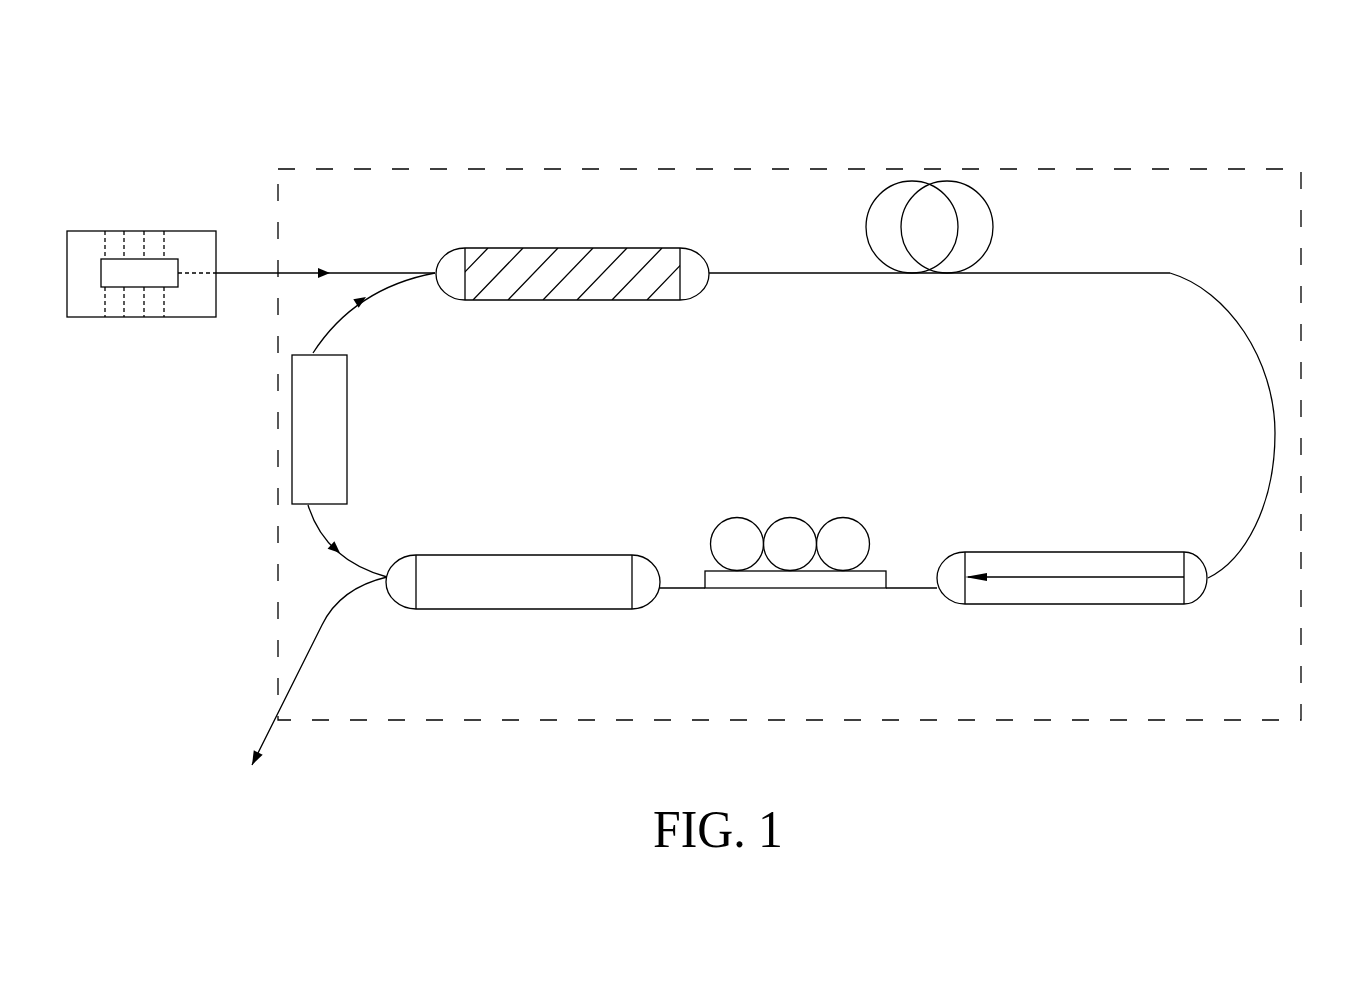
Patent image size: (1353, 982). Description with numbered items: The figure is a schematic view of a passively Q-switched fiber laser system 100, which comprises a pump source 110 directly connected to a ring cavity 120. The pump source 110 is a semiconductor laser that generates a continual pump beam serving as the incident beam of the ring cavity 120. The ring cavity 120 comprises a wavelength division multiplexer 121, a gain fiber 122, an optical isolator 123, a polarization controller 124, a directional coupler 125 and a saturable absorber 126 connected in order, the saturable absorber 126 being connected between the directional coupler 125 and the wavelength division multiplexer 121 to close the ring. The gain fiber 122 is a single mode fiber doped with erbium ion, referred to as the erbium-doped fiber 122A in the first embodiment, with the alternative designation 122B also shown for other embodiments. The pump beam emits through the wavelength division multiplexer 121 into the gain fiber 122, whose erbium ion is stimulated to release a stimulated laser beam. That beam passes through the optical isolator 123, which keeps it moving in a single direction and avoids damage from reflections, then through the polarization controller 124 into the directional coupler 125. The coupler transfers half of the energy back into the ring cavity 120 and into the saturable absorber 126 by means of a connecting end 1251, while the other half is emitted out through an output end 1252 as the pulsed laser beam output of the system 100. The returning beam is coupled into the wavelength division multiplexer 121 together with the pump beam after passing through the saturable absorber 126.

The passively Q-switched fiber laser system 100 is at (1240, 125).
The pump source 110 is at (105, 231).
The ring cavity 120 is at (468, 168).
The wavelength division multiplexer 121 is at (553, 248).
The gain fiber 122 is at (1015, 190).
The erbium-doped fiber 122A is at (912, 227).
The second fiber loop 122B is at (950, 183).
The optical isolator 123 is at (1075, 604).
The polarization controller 124 is at (790, 517).
The directional coupler 125 is at (583, 609).
The saturable absorber 126 is at (305, 422).
The connecting end 1251 is at (330, 540).
The output end 1252 is at (350, 598).